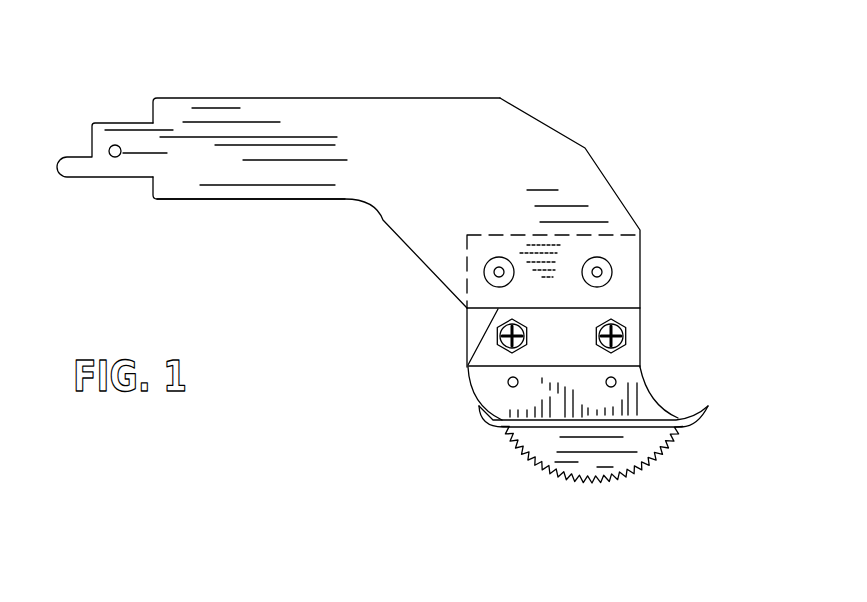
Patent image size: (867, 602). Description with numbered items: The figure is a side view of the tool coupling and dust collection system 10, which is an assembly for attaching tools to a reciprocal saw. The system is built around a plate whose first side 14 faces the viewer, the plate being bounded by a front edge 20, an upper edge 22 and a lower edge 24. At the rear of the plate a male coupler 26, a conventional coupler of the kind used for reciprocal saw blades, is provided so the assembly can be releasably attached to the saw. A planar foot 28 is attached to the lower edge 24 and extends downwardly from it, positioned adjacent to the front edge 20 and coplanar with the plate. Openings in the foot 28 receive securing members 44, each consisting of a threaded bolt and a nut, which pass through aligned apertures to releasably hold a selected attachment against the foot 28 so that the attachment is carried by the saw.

The tool coupling and dust collection system 10 is at (611, 65).
The first side 14 is at (422, 235).
The front edge 20 is at (587, 148).
The upper edge 22 is at (258, 97).
The lower edge 24 is at (250, 199).
The male coupler 26 is at (80, 170).
The planar foot 28 is at (632, 275).
The securing member 44 is at (613, 334).